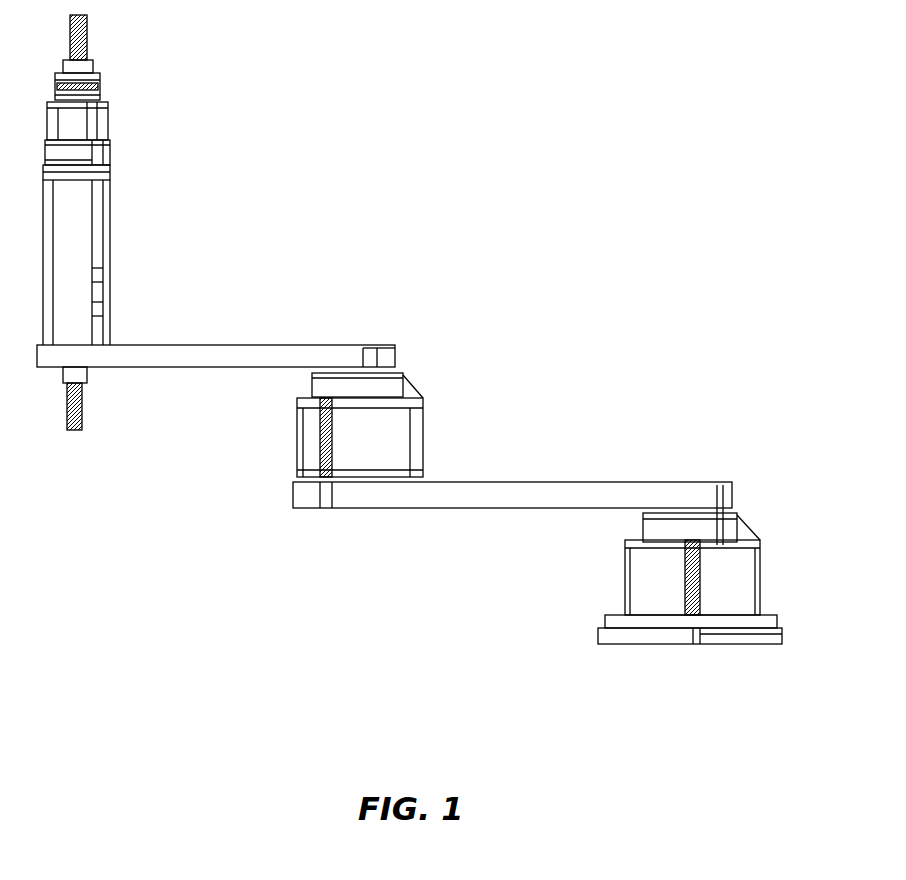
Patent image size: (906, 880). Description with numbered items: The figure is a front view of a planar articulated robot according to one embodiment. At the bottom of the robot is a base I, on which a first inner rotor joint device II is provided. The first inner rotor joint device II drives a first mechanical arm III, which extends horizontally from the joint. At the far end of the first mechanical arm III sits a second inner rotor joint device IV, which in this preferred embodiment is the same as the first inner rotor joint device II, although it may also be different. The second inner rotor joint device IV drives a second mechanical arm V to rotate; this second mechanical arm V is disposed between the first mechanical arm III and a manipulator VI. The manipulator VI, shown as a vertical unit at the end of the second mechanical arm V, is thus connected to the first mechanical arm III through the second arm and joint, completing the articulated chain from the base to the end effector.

The base I is at (627, 627).
The first inner rotor joint device II is at (725, 562).
The first mechanical arm III is at (580, 497).
The second inner rotor joint device IV is at (383, 432).
The second mechanical arm V is at (290, 358).
The manipulator VI is at (83, 215).